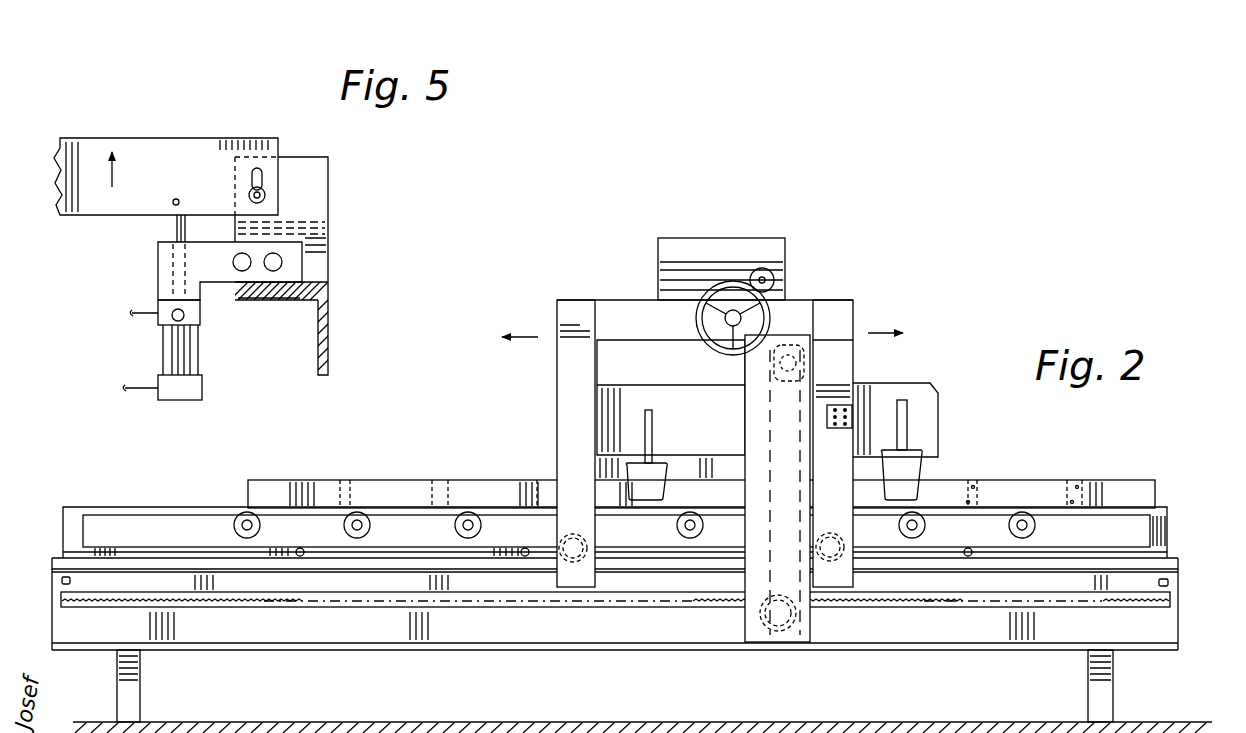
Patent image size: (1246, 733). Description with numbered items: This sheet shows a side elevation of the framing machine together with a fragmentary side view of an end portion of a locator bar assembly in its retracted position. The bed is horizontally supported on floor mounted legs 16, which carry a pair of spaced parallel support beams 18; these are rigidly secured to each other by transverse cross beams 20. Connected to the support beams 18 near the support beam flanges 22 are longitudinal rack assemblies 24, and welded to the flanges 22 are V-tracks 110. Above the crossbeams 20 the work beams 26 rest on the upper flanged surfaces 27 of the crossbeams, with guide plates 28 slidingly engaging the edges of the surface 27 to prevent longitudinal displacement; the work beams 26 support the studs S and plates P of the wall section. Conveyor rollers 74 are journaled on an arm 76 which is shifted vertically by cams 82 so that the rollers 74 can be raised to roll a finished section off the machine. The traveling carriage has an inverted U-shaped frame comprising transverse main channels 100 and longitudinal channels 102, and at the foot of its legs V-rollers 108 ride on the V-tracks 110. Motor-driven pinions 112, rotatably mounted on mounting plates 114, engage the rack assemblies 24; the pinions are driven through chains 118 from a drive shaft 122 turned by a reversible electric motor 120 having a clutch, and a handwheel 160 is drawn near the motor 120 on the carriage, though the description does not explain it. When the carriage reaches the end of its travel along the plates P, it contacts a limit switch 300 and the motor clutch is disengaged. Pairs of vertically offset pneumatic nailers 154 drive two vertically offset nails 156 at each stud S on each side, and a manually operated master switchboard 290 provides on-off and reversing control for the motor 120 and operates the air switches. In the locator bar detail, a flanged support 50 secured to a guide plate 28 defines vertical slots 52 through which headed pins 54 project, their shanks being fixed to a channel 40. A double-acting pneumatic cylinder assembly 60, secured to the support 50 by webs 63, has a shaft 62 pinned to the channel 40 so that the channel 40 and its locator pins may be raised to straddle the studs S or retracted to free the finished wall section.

In FIG. 2, the legs 16 is at (142, 686).
In FIG. 2, the support beams 18 is at (342, 633).
In FIG. 2, the support beam flanges 22 is at (428, 649).
In FIG. 2, the rack assemblies 24 is at (250, 607).
In FIG. 2, the work beams 26 is at (1165, 538).
In FIG. 2, the arm 76 is at (1140, 529).
In FIG. 2, the conveyor rollers 74 is at (357, 512).
In FIG. 2, the cams 82 is at (303, 556).
In FIG. 2, the V-tracks 110 is at (1180, 560).
In FIG. 2, the limit switch 300 is at (63, 578).
In FIG. 2, the V-roller 108 is at (606, 580).
In FIG. 2, the pinions 112 is at (765, 622).
In FIG. 2, the chains 118 is at (768, 431).
In FIG. 2, the reversible electric motor 120 is at (776, 250).
In FIG. 2, the drive shaft 122 is at (797, 345).
In FIG. 2, the handwheel 160 is at (697, 318).
In FIG. 2, the mounting plates 114 is at (820, 340).
In FIG. 2, the transverse main channels 100 is at (853, 373).
In FIG. 2, the longitudinal channels 102 is at (622, 318).
In FIG. 2, the master switchboard 290 is at (840, 430).
In FIG. 2, the pneumatic nailers 154 is at (637, 487).
In FIG. 2, the nails 156 is at (1072, 500).
In FIG. 2, the studs S is at (974, 485).
In FIG. 2, the plates P is at (1140, 491).
In FIG. 5, the channels 40 is at (178, 150).
In FIG. 5, the flanged supports 50 is at (318, 180).
In FIG. 5, the vertical slots 52 is at (257, 168).
In FIG. 5, the headed pins 54 is at (265, 192).
In FIG. 5, the shaft 62 is at (175, 226).
In FIG. 5, the webs 63 is at (302, 263).
In FIG. 5, the upper flanged surfaces 27 is at (322, 288).
In FIG. 5, the guide plates 28 is at (258, 300).
In FIG. 5, the transverse cross beams 20 is at (330, 333).
In FIG. 5, the double-acting pneumatic cylinder assembly 60 is at (190, 365).